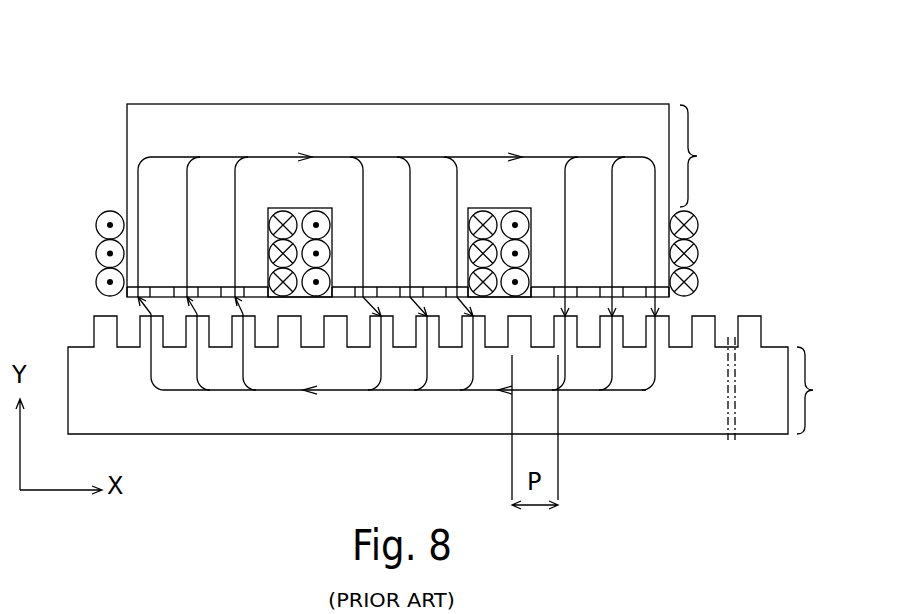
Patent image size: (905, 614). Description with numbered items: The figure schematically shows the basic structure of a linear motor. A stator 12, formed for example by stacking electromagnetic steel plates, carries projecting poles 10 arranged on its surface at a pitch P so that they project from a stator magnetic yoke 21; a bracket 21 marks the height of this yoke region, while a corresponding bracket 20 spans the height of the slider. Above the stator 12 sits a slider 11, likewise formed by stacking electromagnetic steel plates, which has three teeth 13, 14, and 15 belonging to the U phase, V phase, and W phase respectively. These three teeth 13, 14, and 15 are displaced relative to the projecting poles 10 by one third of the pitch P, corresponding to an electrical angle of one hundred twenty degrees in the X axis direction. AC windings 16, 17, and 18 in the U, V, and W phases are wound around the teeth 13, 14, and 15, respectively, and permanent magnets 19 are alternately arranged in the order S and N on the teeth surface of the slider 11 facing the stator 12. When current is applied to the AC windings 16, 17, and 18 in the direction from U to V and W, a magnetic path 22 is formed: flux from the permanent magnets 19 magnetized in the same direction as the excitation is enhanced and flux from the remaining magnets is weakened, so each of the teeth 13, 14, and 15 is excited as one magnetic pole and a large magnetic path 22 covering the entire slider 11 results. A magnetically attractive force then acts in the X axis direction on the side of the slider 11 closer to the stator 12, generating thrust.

The projecting poles 10 is at (752, 312).
The slider 11 is at (638, 92).
The stator 12 is at (665, 412).
The tooth (U phase) 13 is at (168, 242).
The tooth (V phase) 14 is at (437, 253).
The tooth (W phase) 15 is at (632, 248).
The AC winding (U phase) 16 is at (96, 220).
The AC winding (V phase) 17 is at (328, 216).
The AC winding (W phase) 18 is at (520, 211).
The permanent magnets 19 is at (167, 298).
The stator height 20 is at (705, 156).
The stator magnetic yoke 21 is at (819, 390).
The magnetic path 22 is at (290, 157).